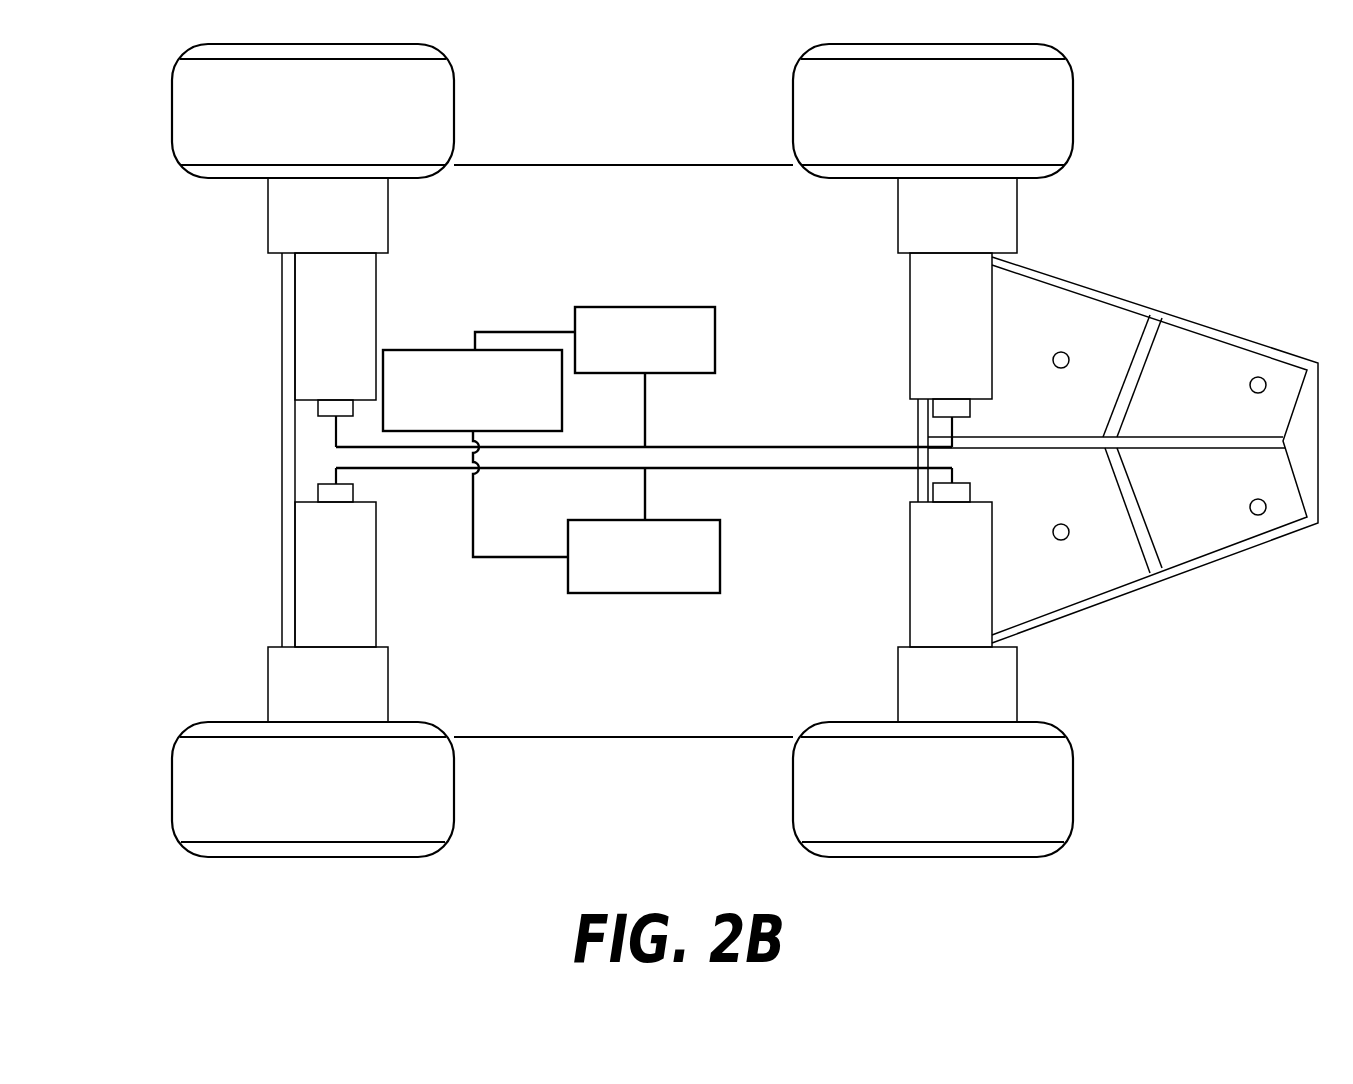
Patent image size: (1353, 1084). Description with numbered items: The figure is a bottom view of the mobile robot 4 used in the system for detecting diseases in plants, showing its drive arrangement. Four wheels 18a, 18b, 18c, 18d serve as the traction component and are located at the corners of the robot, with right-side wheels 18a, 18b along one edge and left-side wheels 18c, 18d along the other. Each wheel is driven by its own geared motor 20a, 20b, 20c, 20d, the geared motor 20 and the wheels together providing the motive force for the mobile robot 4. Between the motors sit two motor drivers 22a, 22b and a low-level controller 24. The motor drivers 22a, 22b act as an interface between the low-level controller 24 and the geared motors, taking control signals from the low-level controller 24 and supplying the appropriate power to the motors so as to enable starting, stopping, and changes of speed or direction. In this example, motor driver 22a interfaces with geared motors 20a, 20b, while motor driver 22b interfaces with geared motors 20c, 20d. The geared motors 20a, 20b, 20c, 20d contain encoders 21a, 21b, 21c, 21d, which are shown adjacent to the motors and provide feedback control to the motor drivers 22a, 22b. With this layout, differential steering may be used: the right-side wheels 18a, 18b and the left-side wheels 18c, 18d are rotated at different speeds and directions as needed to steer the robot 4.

The mobile robot 4 is at (1200, 138).
The wheel 18a is at (186, 86).
The wheel 18b is at (804, 86).
The wheel 18c is at (186, 773).
The wheel 18d is at (804, 773).
The geared motor 20 is at (310, 300).
The geared motor 20a is at (358, 312).
The geared motor 20b is at (917, 312).
The geared motor 20c is at (358, 563).
The geared motor 20d is at (917, 592).
The encoder 21a is at (320, 403).
The encoder 21b is at (943, 405).
The encoder 21c is at (327, 492).
The encoder 21d is at (943, 492).
The motor driver 22a is at (628, 349).
The motor driver 22b is at (628, 567).
The low-level controller 24 is at (460, 401).